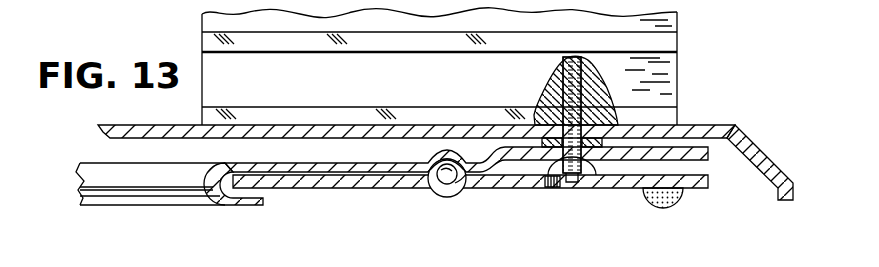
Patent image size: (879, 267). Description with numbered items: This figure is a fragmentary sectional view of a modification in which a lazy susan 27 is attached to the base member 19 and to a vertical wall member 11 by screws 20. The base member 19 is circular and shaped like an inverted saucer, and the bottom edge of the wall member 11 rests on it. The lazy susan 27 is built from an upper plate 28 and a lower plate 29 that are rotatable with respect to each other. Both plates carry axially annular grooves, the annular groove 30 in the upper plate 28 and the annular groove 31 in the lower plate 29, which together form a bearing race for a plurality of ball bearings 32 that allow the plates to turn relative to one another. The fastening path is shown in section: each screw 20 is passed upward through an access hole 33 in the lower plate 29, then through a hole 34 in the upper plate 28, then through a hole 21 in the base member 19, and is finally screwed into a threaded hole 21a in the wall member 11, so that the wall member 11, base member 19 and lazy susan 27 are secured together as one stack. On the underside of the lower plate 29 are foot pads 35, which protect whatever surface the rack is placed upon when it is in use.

The wall member 11 is at (678, 72).
The base member 19 is at (766, 160).
The screws 20 is at (588, 190).
The holes 21 is at (545, 101).
The threaded holes 21a is at (566, 76).
The lazy susan 27 is at (166, 205).
The upper plate 28 is at (712, 154).
The lower plate 29 is at (700, 190).
The annular groove 30 is at (440, 192).
The annular groove 31 is at (460, 186).
The ball bearings 32 is at (446, 192).
The access holes 33 is at (590, 186).
The holes 34 is at (524, 175).
The foot pads 35 is at (668, 205).